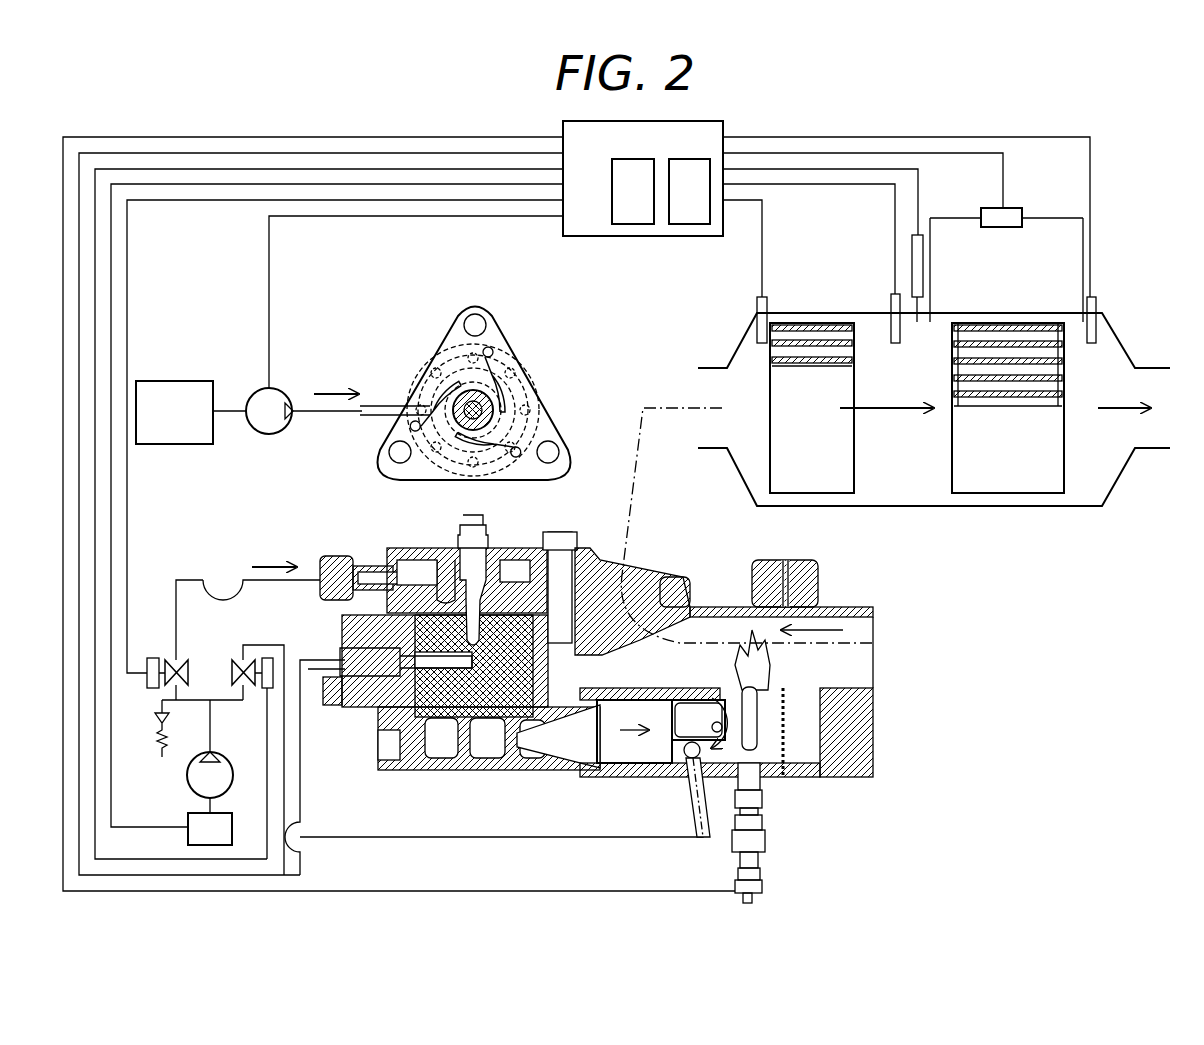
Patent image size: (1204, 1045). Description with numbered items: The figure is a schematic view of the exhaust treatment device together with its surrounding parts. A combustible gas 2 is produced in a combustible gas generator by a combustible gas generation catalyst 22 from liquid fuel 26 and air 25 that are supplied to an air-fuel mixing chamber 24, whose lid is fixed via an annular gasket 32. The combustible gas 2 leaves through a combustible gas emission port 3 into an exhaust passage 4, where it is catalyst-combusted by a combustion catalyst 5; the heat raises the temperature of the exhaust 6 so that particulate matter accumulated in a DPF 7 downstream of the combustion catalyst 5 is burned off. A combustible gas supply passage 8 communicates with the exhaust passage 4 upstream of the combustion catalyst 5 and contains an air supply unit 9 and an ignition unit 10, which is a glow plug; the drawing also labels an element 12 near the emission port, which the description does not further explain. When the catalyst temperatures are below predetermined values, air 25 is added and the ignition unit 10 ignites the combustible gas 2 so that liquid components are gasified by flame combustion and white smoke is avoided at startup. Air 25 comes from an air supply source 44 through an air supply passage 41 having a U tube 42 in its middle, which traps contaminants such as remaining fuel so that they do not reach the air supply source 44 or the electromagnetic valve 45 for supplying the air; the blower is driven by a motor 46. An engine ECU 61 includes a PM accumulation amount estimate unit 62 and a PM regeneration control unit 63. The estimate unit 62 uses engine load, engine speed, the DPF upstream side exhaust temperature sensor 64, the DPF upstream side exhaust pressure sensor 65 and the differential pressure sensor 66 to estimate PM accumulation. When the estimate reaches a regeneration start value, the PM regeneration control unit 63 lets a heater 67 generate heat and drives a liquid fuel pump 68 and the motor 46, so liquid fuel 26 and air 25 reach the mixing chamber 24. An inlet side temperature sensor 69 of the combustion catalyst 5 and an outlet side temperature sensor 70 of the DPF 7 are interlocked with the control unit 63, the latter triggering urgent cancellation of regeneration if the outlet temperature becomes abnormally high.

The combustible gas 2 is at (700, 700).
The combustible gas emission port 3 is at (727, 683).
The exhaust passage 4 is at (720, 622).
The combustion catalyst 5 is at (810, 478).
The exhaust 6 is at (893, 412).
The DPF 7 is at (1015, 478).
The combustible gas supply passage 8 is at (645, 760).
The air supply unit 9 is at (690, 770).
The ignition unit 10 is at (750, 720).
The exhaust gas introduction port 12 is at (705, 700).
The combustible gas generation catalyst 22 is at (548, 671).
The air-fuel mixing chamber 24 is at (467, 392).
The air 25 is at (271, 533).
The liquid fuel 26 is at (336, 367).
The annular gasket 32 is at (510, 343).
The air supply passage 41 is at (197, 578).
The U tube 42 is at (238, 603).
The air supply source 44 is at (227, 782).
The electromagnetic valve 45 is at (173, 657).
The motor 46 is at (195, 825).
The engine ECU 61 is at (587, 220).
The PM accumulation amount estimate unit 62 is at (634, 213).
The PM regeneration control unit 63 is at (690, 213).
The DPF upstream side exhaust temperature sensor 64 is at (893, 345).
The DPF upstream side exhaust pressure sensor 65 is at (920, 265).
The differential pressure sensor 66 is at (985, 222).
The heater 67 is at (472, 607).
The liquid fuel pump 68 is at (273, 402).
The inlet side temperature sensor 69 is at (762, 345).
The outlet side temperature sensor 70 is at (1088, 345).